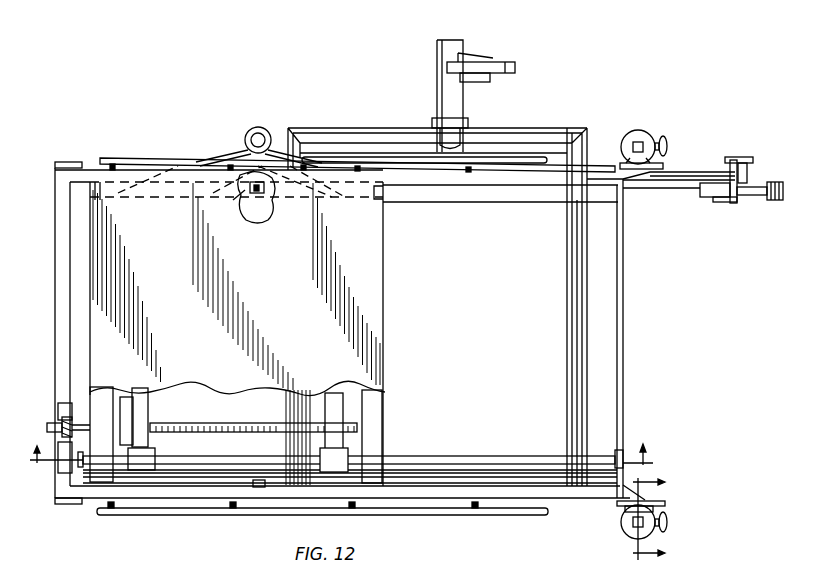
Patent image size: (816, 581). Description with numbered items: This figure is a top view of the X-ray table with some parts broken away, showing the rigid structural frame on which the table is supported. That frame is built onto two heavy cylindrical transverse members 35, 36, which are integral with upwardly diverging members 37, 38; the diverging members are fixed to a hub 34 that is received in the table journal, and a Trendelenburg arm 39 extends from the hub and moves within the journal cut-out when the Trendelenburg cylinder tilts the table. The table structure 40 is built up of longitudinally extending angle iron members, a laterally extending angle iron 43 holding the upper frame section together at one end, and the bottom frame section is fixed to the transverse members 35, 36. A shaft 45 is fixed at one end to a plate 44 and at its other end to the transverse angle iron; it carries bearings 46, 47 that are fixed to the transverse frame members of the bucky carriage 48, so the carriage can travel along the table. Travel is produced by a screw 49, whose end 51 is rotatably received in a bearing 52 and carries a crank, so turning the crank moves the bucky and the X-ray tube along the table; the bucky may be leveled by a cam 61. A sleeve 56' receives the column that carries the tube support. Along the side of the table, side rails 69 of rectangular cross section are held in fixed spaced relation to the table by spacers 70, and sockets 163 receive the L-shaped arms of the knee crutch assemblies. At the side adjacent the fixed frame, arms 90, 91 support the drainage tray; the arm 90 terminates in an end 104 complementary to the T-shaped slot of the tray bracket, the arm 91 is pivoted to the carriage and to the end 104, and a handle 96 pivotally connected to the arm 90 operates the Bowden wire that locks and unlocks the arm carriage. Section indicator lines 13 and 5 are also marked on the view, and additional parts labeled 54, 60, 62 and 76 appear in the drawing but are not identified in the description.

The hub 34 is at (448, 41).
The Trendelenburg arm 39 is at (513, 63).
The upwardly diverging member 37 is at (399, 128).
The upwardly diverging member 38 is at (582, 128).
The side rail 69 is at (498, 157).
The socket 163 is at (627, 130).
The drive wheel 76 is at (666, 144).
The arm 91 is at (688, 178).
The arm 90 is at (678, 190).
The end 104 is at (723, 204).
The handle 96 is at (770, 200).
The sleeve 56' is at (273, 120).
The bucky carriage 48 is at (216, 193).
The spacer 70 is at (119, 163).
The bracket 62 is at (228, 205).
The mounting clip 60 is at (256, 197).
The panel 54 is at (278, 271).
The laterally extending angle iron 43 is at (63, 273).
The table structure 40 is at (396, 331).
The transverse member 35 is at (568, 266).
The plate 44 is at (623, 344).
The bearing 52 is at (62, 420).
The end 51 is at (47, 427).
The screw 49 is at (190, 424).
The transverse member 36 is at (290, 413).
The bearing 47 is at (155, 452).
The bearing 46 is at (345, 470).
The shaft 45 is at (458, 458).
The cam 61 is at (259, 488).
The section line 13- 13 is at (334, 443).
The section line 5- 5 is at (656, 519).